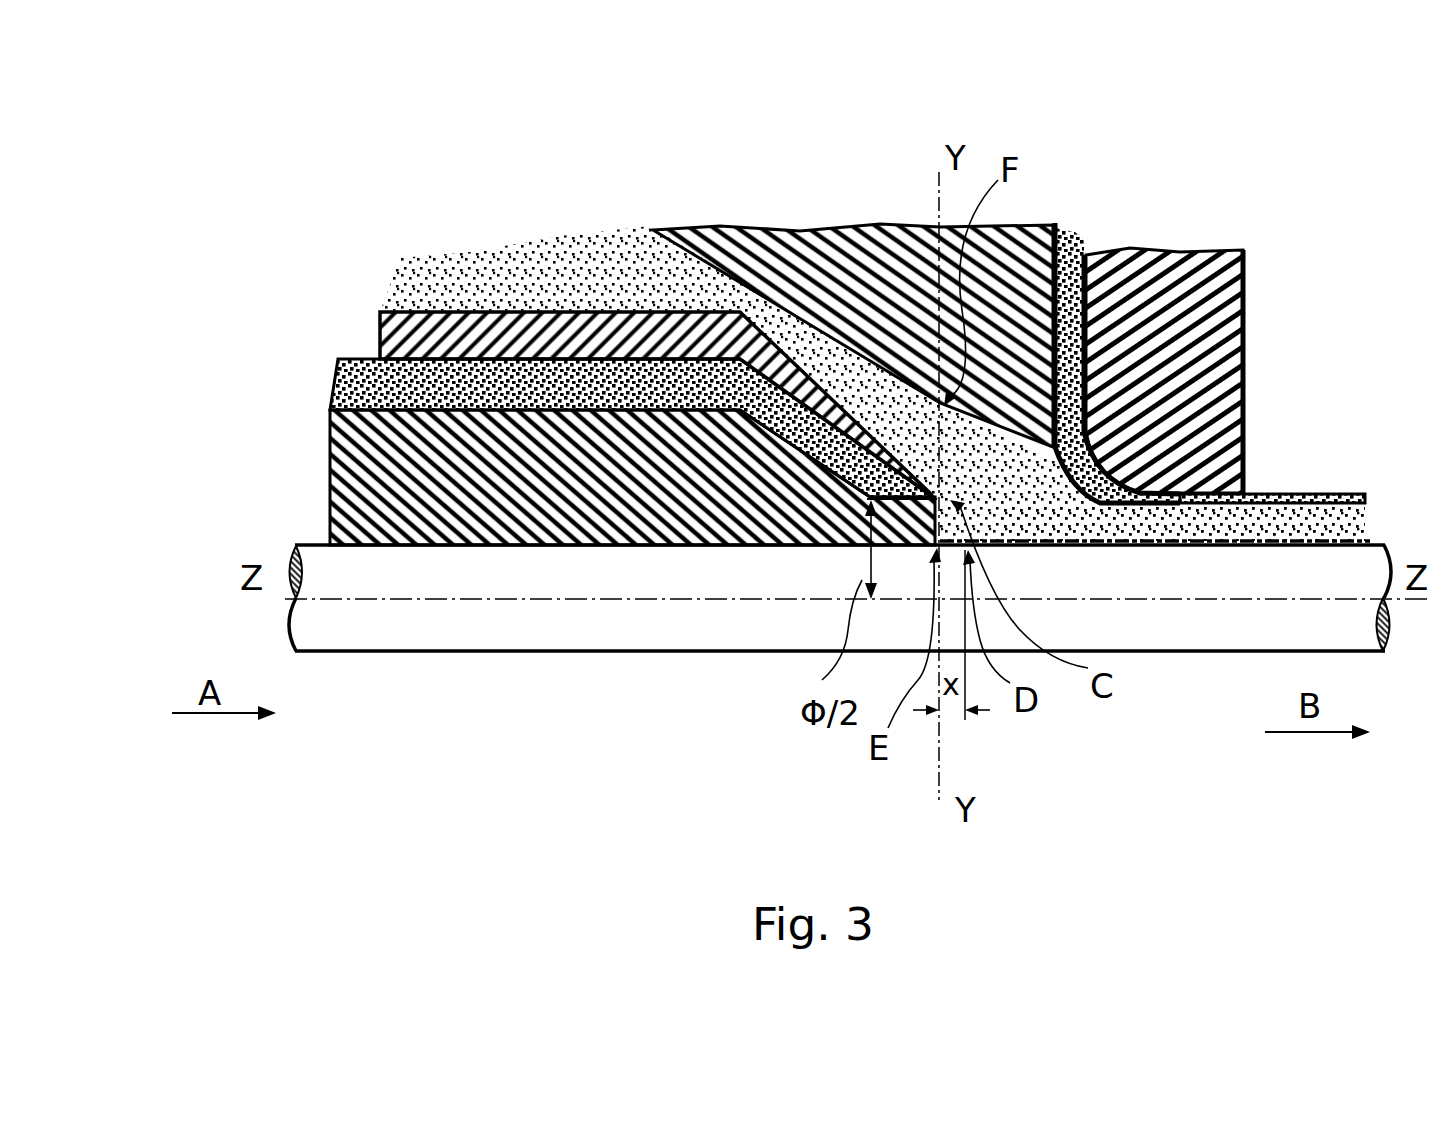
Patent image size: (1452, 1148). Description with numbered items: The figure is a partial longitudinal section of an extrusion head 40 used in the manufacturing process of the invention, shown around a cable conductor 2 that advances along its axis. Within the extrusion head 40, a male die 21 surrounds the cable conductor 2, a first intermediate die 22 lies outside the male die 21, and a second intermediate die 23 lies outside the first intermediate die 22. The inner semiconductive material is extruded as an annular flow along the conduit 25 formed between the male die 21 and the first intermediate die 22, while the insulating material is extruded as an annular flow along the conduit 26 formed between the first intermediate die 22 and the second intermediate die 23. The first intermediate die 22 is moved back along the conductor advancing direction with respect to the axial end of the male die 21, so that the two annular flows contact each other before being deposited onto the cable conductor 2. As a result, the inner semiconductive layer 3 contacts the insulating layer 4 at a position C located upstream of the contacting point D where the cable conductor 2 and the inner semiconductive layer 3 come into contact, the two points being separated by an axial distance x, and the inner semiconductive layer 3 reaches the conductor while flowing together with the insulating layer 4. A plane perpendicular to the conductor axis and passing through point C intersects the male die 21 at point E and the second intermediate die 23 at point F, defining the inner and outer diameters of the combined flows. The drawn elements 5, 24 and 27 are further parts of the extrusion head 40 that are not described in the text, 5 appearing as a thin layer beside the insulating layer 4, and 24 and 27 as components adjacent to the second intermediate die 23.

The cable conductor 2 is at (693, 605).
The inner semiconductive layer 3 is at (1318, 540).
The insulating layer 4 is at (1300, 515).
The thin intermediate layer 5 is at (1262, 497).
The male die 21 is at (405, 515).
The first intermediate die 22 is at (432, 323).
The second intermediate die 23 is at (836, 282).
The right hatched block 24 is at (1148, 290).
The conduit 25 is at (402, 392).
The conduit 26 is at (692, 292).
The stippled channel layer 27 is at (1068, 275).
The extrusion head 40 is at (422, 199).